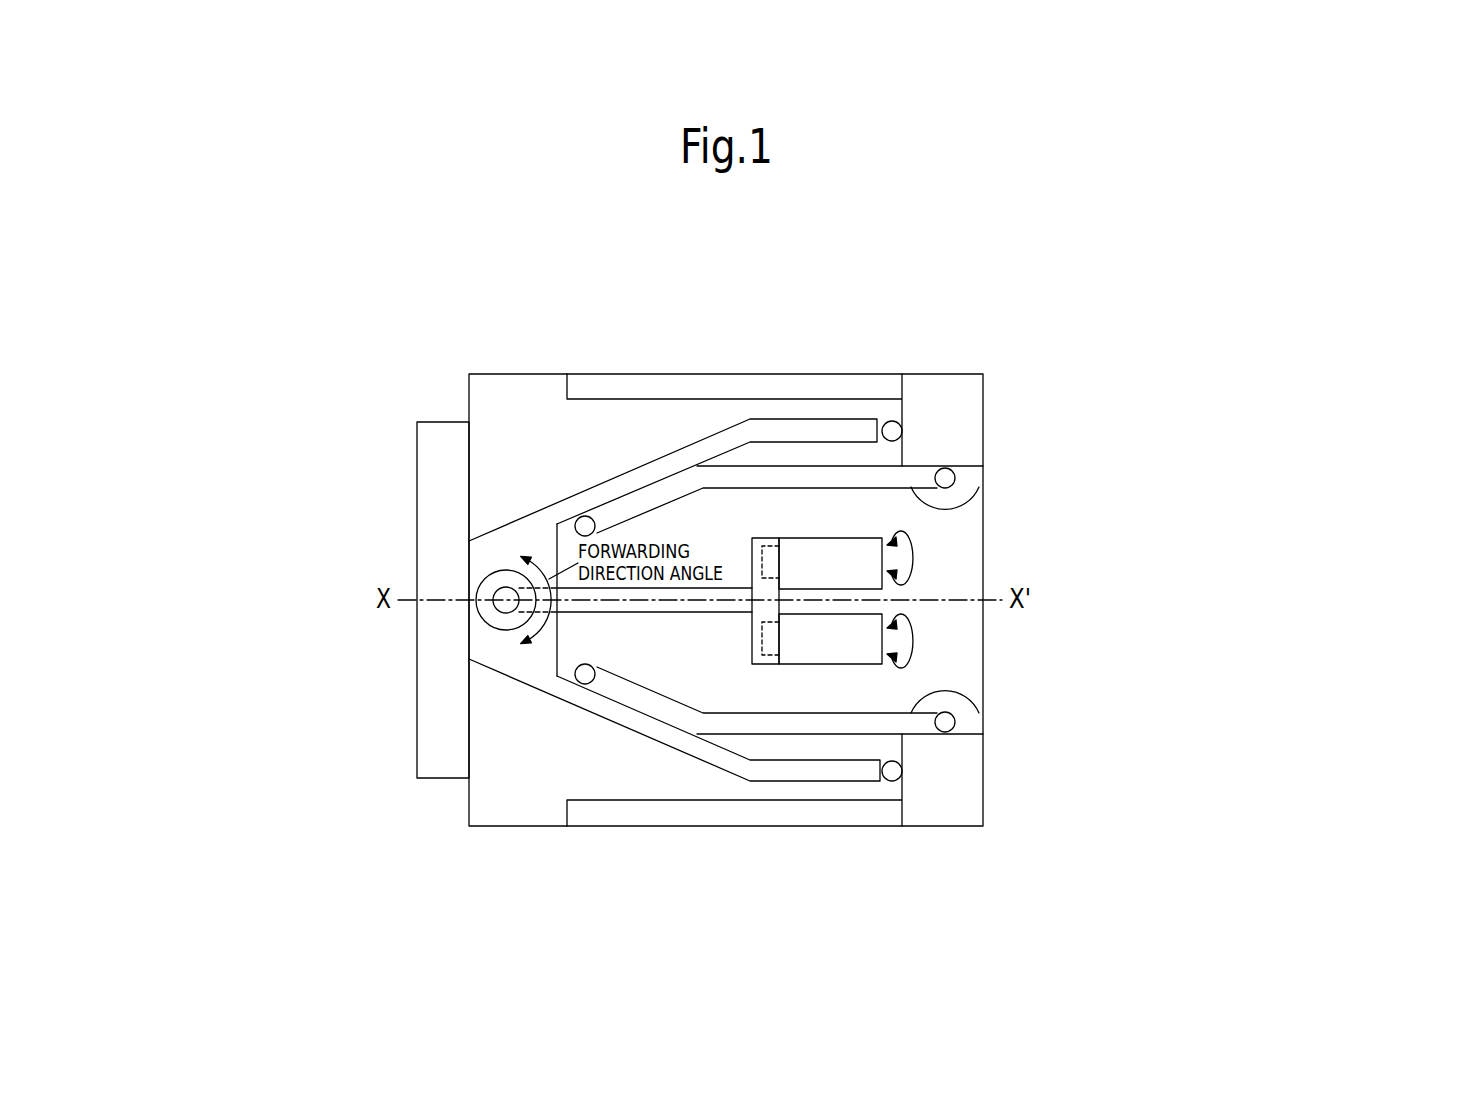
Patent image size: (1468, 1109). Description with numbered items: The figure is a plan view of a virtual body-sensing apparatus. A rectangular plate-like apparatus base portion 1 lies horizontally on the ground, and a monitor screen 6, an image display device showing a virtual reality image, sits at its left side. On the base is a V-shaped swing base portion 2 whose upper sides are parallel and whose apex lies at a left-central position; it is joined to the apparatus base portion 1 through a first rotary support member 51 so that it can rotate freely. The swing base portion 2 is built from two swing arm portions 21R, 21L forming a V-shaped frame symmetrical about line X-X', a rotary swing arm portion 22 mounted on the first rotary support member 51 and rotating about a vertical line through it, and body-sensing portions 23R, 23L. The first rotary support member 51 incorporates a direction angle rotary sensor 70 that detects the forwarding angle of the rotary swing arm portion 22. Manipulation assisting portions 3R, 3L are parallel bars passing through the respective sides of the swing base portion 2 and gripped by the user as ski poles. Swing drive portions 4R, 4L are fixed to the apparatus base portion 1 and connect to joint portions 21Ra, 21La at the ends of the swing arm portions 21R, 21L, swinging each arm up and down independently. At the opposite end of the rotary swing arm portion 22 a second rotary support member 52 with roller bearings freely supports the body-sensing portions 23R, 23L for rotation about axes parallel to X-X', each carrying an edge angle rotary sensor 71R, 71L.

The apparatus base portion 1 is at (490, 790).
The swing base portion 2 is at (502, 537).
The monitor screen 6 is at (432, 494).
The rotary swing arm portion 22 is at (585, 603).
The first rotary support member 51 is at (480, 622).
The direction angle rotary sensor 70 is at (477, 585).
The swing arm portion 21R is at (673, 462).
The swing arm portion 21L is at (710, 752).
The joint portion 21Ra is at (895, 431).
The joint portion 21La is at (900, 772).
The manipulation assisting portion 3R is at (822, 470).
The manipulation assisting portion 3L is at (803, 727).
The swing drive portion 4R is at (930, 388).
The swing drive portion 4L is at (952, 808).
The second rotary support member 52 is at (767, 665).
The edge angle rotary sensor 71R is at (765, 540).
The edge angle rotary sensor 71L is at (762, 641).
The body-sensing portion 23R is at (865, 559).
The body-sensing portion 23L is at (865, 642).